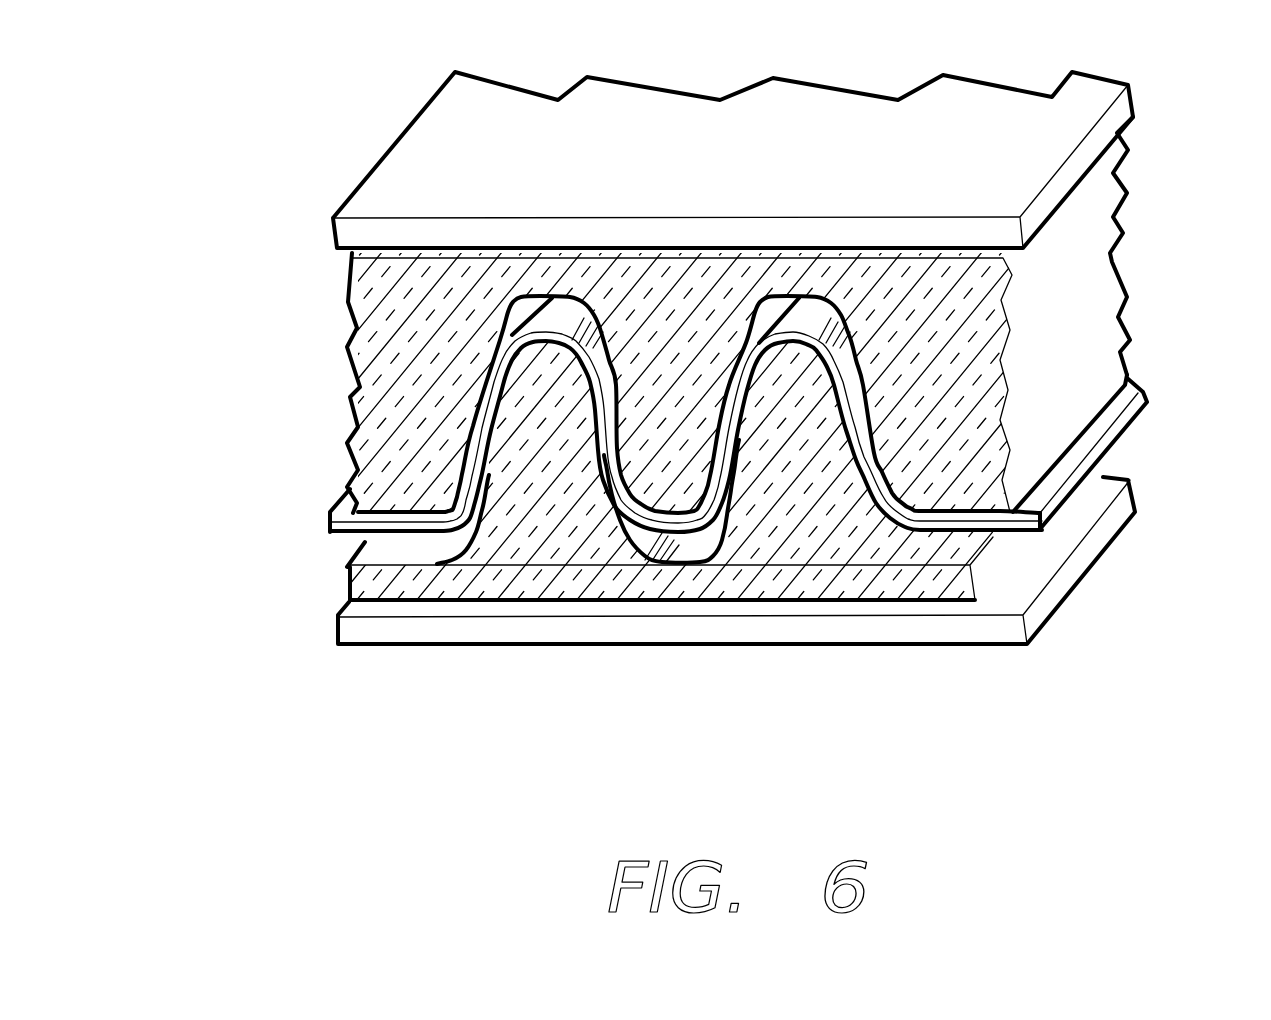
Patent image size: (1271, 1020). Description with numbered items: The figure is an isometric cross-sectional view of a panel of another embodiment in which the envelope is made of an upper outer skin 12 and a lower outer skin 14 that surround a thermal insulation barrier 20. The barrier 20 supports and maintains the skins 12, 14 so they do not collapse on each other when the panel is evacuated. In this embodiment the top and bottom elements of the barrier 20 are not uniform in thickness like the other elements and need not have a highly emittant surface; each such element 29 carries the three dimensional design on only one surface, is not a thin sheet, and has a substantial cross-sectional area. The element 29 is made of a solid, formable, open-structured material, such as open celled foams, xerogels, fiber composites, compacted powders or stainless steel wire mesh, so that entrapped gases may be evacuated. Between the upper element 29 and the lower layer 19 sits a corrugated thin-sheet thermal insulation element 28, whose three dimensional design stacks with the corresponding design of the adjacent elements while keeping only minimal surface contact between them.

The upper outer skin 12 is at (817, 123).
The lower outer skin 14 is at (858, 625).
The lower core layer 19 is at (785, 540).
The thermal insulation barrier 20 is at (300, 374).
The thermal insulation element 28 is at (330, 523).
The thermal insulation element 29 is at (960, 367).